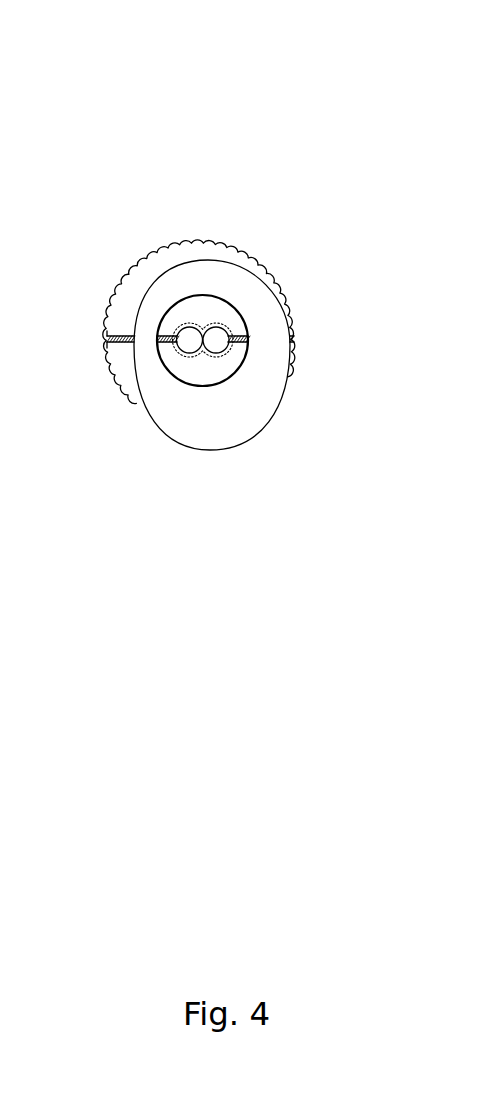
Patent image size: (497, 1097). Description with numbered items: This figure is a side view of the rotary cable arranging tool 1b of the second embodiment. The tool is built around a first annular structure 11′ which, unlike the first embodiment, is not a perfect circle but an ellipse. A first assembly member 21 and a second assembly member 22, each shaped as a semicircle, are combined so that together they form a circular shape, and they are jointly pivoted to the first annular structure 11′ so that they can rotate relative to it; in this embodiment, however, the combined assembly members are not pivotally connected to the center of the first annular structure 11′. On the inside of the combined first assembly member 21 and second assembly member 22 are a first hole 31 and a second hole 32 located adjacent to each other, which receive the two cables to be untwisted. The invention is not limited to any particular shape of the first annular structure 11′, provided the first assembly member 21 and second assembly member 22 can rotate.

The rotary cable arranging tool 1b is at (382, 112).
The first annular structure 11′ is at (222, 436).
The first assembly member 21 is at (120, 306).
The second assembly member 22 is at (116, 357).
The first hole 31 is at (187, 337).
The second hole 32 is at (215, 336).